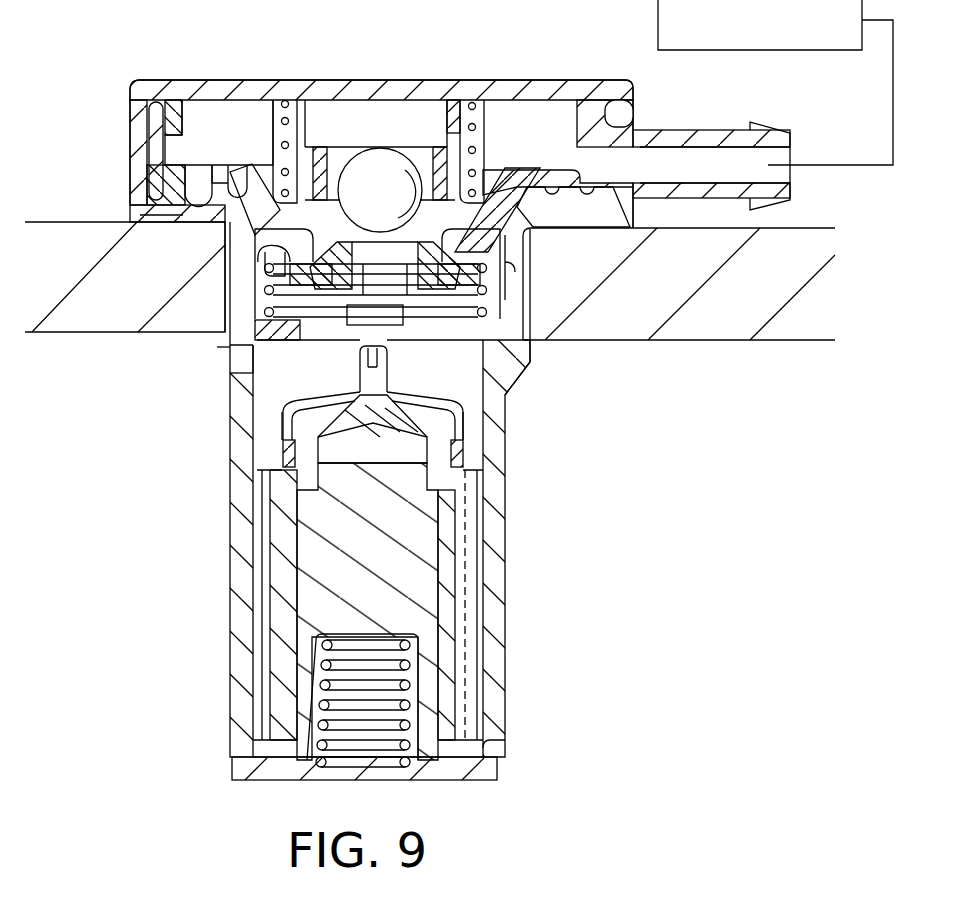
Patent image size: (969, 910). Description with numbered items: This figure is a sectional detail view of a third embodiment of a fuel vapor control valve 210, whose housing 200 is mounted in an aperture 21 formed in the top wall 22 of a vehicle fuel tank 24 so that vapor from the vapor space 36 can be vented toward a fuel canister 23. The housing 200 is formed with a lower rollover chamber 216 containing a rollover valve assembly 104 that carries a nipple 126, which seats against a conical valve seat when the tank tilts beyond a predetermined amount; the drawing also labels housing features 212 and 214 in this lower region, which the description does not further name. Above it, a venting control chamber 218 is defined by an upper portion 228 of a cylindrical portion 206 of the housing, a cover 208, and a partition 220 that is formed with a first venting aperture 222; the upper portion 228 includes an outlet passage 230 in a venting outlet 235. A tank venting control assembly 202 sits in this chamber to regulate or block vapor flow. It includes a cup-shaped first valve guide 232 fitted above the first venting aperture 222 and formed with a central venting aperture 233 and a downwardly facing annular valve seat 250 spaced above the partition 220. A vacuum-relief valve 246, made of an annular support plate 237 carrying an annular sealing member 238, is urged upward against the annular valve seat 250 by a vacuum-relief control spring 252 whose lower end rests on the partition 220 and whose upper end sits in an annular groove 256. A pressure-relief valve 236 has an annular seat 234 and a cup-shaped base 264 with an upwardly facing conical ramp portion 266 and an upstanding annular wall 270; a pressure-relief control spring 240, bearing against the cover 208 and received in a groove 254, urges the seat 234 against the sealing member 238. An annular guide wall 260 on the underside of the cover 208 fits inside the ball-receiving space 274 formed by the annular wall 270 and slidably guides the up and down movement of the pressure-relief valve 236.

The aperture 21 is at (521, 270).
The top wall 22 is at (38, 258).
The fuel canister 23 is at (645, 22).
The fuel tank 24 is at (802, 223).
The vapor space 36 is at (818, 302).
The rollover valve assembly 104 is at (465, 391).
The nipple 126 is at (373, 415).
The housing 200 is at (220, 348).
The tank venting control assembly 202 is at (256, 118).
The cylindrical portion 206 is at (505, 493).
The cover 208 is at (507, 90).
The fuel vapor control valve 210 is at (745, 113).
The slot 212 is at (240, 362).
The sleeve 214 is at (258, 412).
The lower rollover chamber 216 is at (468, 373).
The venting control chamber 218 is at (203, 125).
The partition 220 is at (445, 318).
The first venting aperture 222 is at (393, 337).
The upper portion 228 is at (240, 242).
The outlet passage 230 is at (655, 155).
The first valve guide 232 is at (262, 205).
The central venting aperture 233 is at (345, 255).
The annular seat 234 is at (245, 383).
The venting outlet 235 is at (792, 117).
The pressure-relief valve 236 is at (133, 217).
The annular support plate 237 is at (490, 276).
The annular sealing member 238 is at (585, 318).
The pressure-relief control spring 240 is at (282, 122).
The vacuum-relief valve 246 is at (258, 265).
The annular valve seat 250 is at (270, 315).
The vacuum-relief control spring 252 is at (275, 296).
The groove 254 is at (475, 183).
The annular groove 256 is at (262, 290).
The annular guide wall 260 is at (318, 112).
The cup-shaped base 264 is at (537, 250).
The conical ramp portion 266 is at (433, 185).
The annular wall 270 is at (450, 158).
The ball-receiving space 274 is at (364, 125).